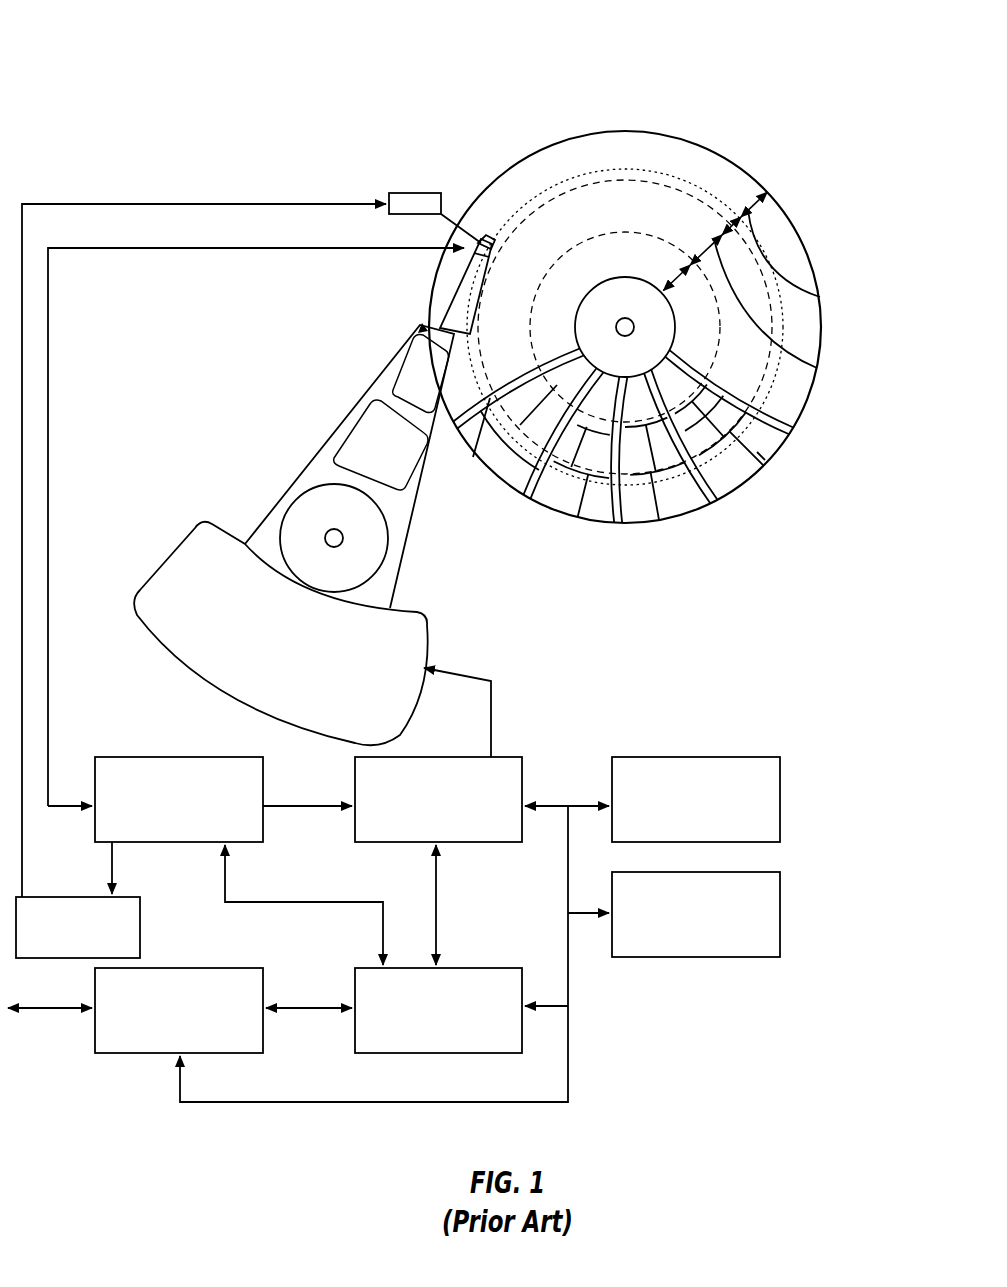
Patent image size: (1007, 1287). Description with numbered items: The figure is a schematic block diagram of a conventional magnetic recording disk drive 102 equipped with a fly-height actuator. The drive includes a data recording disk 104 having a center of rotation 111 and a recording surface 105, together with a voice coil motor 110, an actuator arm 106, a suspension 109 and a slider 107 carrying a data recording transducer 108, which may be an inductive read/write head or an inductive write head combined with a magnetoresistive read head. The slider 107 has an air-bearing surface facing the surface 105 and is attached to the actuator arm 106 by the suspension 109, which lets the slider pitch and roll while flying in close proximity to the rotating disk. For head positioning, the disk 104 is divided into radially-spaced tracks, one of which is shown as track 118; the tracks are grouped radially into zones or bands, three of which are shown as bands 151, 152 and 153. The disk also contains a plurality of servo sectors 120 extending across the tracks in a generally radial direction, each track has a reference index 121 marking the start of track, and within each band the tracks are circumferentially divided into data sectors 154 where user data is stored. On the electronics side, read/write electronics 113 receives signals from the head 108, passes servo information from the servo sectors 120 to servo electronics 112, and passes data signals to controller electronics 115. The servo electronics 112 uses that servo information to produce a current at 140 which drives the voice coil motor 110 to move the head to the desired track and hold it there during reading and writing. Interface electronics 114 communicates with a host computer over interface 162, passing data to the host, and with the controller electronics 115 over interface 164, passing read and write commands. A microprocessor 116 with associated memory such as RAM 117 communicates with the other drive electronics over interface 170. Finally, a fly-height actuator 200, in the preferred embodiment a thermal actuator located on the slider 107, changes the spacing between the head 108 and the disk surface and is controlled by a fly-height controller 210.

The disk drive 102 is at (152, 55).
The data recording disk 104 is at (581, 136).
The disk surface 105 is at (679, 151).
The actuator arm 106 is at (392, 354).
The slider 107 is at (491, 254).
The data recording transducer 108 is at (498, 242).
The suspension 109 is at (463, 271).
The voice coil motor 110 is at (204, 532).
The center of rotation 111 is at (624, 318).
The servo electronics 112 is at (420, 757).
The read/write electronics 113 is at (155, 757).
The interface electronics 114 is at (190, 968).
The controller electronics 115 is at (462, 968).
The microprocessor 116 is at (777, 757).
The RAM 117 is at (777, 872).
The track 118 is at (510, 207).
The servo sectors 120 is at (521, 498).
The reference index 121 is at (777, 436).
The current 140 is at (491, 692).
The band 151 is at (821, 297).
The band 152 is at (816, 369).
The band 153 is at (672, 285).
The data sectors 154 is at (761, 458).
The interface 162 is at (50, 997).
The interface 164 is at (309, 997).
The interface 170 is at (394, 954).
The fly-height actuator 200 is at (404, 191).
The fly-height controller 210 is at (130, 897).